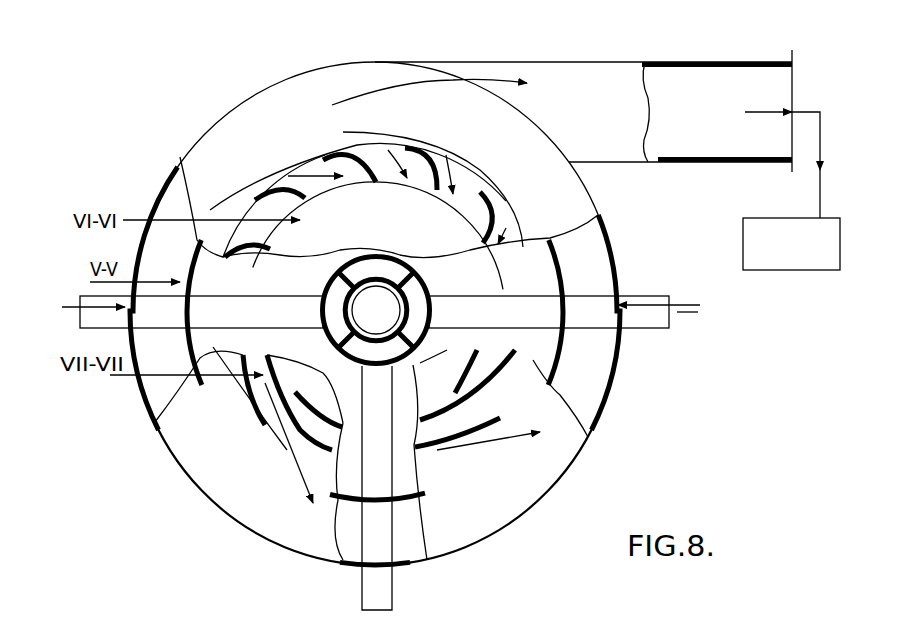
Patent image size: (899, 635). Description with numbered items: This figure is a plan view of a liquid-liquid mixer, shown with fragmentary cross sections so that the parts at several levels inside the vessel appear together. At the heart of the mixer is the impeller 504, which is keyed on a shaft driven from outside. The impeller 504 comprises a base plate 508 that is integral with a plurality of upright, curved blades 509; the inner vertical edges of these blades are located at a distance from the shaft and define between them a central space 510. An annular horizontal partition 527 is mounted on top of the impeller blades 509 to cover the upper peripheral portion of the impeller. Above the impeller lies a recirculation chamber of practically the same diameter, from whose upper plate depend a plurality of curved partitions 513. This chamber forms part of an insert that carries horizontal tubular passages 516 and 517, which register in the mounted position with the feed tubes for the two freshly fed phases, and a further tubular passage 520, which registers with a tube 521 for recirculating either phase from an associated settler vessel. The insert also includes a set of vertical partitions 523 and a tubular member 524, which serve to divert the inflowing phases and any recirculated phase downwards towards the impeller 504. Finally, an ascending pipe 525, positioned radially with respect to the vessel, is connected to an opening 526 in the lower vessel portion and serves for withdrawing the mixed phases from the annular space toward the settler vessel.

The impeller 504 is at (427, 450).
The base plate 508 is at (241, 396).
The curved blades 509 is at (458, 404).
The space 510 is at (425, 403).
The curved partitions 513 is at (272, 236).
The horizontal tubular passage 516 is at (218, 303).
The horizontal tubular passage 517 is at (487, 300).
The tubular passage 520 is at (366, 392).
The tube 521 is at (381, 590).
The vertical partitions 523 is at (325, 292).
The tubular member 524 is at (376, 310).
The ascending pipe 525 is at (600, 72).
The opening 526 is at (540, 134).
The annular horizontal partition 527 is at (307, 167).